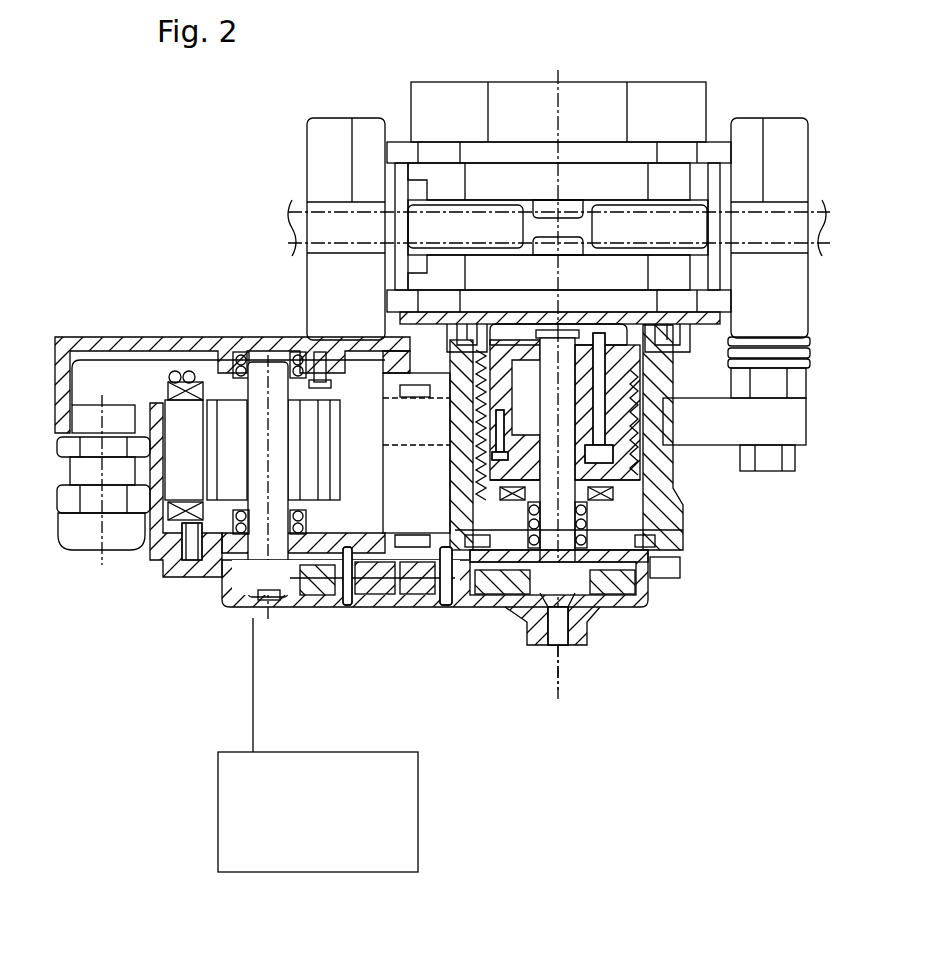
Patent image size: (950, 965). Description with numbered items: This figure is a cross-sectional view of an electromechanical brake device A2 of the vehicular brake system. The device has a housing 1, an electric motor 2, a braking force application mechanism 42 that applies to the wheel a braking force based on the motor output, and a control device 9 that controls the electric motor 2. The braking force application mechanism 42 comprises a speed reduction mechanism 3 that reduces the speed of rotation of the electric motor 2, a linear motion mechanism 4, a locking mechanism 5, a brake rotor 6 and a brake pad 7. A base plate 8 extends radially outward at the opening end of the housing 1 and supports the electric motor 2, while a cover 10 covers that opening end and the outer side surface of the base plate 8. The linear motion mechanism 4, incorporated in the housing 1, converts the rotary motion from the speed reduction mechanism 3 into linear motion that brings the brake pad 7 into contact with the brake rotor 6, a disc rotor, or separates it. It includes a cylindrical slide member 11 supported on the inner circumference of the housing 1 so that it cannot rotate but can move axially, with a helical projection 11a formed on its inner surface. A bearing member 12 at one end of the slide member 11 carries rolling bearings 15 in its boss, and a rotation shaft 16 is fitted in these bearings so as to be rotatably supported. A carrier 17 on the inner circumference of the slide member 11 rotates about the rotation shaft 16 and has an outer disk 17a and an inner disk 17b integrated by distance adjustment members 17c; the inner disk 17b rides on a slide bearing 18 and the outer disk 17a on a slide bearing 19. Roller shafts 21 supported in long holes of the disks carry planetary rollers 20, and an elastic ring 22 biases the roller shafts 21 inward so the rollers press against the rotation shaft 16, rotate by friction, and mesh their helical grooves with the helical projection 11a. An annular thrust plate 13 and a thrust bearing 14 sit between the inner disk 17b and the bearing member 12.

The electromechanical brake device A2 is at (238, 203).
The housing 1 is at (662, 518).
The electric motor 2 is at (205, 370).
The speed reduction mechanism 3 is at (466, 606).
The linear motion mechanism 4 is at (620, 568).
The locking mechanism 5 is at (387, 585).
The brake rotor 6 is at (812, 235).
The brake pad 7 is at (688, 300).
The base plate 8 is at (165, 547).
The control device 9 is at (218, 775).
The cover 10 is at (593, 617).
The slide member 11 is at (752, 374).
The helical projection 11a is at (640, 380).
The bearing member 12 is at (650, 530).
The annular thrust plate 13 is at (660, 473).
The thrust bearing 14 is at (640, 492).
The rolling bearing 15 is at (655, 578).
The rotation shaft 16 is at (650, 347).
The carrier 17 is at (440, 345).
The outer disk 17a is at (503, 340).
The inner disk 17b is at (547, 592).
The distance adjustment member 17c is at (430, 385).
The slide bearing 18 is at (665, 425).
The slide bearing 19 is at (600, 340).
The planetary roller 20 is at (566, 648).
The roller shaft 21 is at (782, 347).
The elastic ring 22 is at (528, 340).
The braking force application mechanism 42 is at (421, 620).